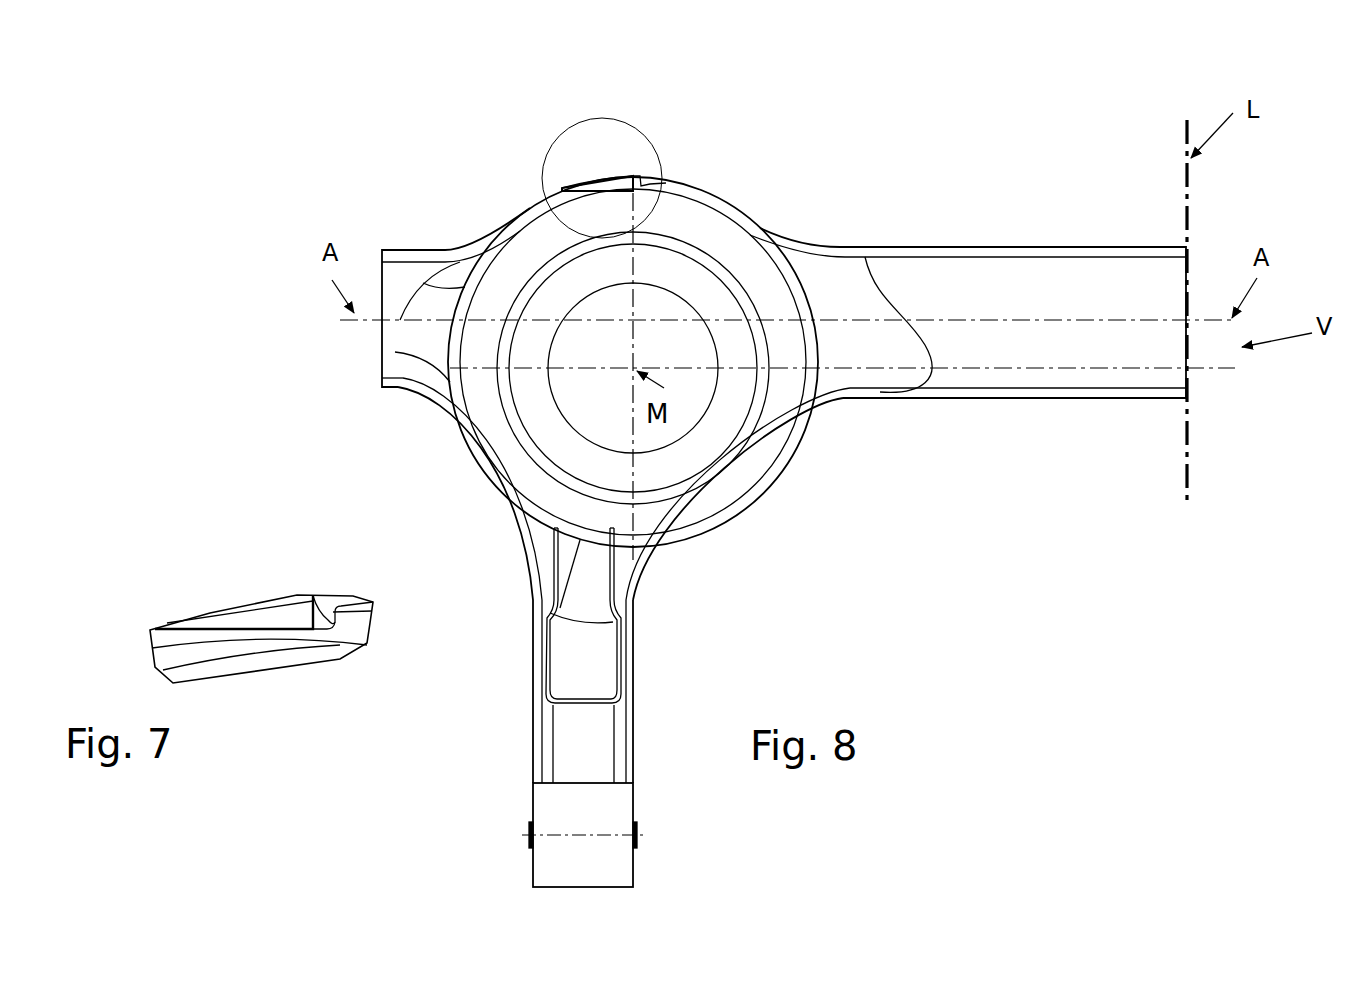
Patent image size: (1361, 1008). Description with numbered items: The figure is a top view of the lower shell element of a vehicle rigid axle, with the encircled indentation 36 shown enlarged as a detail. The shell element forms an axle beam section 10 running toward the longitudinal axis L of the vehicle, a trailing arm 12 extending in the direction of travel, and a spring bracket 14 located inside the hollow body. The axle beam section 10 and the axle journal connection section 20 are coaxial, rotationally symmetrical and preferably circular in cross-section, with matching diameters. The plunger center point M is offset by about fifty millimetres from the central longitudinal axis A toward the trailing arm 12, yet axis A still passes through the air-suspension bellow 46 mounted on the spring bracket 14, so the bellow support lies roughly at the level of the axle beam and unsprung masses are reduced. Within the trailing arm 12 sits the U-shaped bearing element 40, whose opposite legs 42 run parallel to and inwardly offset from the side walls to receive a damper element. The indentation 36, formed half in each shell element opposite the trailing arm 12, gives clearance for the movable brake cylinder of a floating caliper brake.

The axle beam section 10 is at (1090, 245).
The trailing arm 12 is at (520, 738).
The spring bracket 14 is at (702, 230).
The axle journal connection section 20 is at (418, 240).
The indentation 36 is at (600, 160).
The bearing element 40 is at (542, 637).
The legs 42 is at (624, 652).
The air-suspension bellow 46 is at (575, 432).